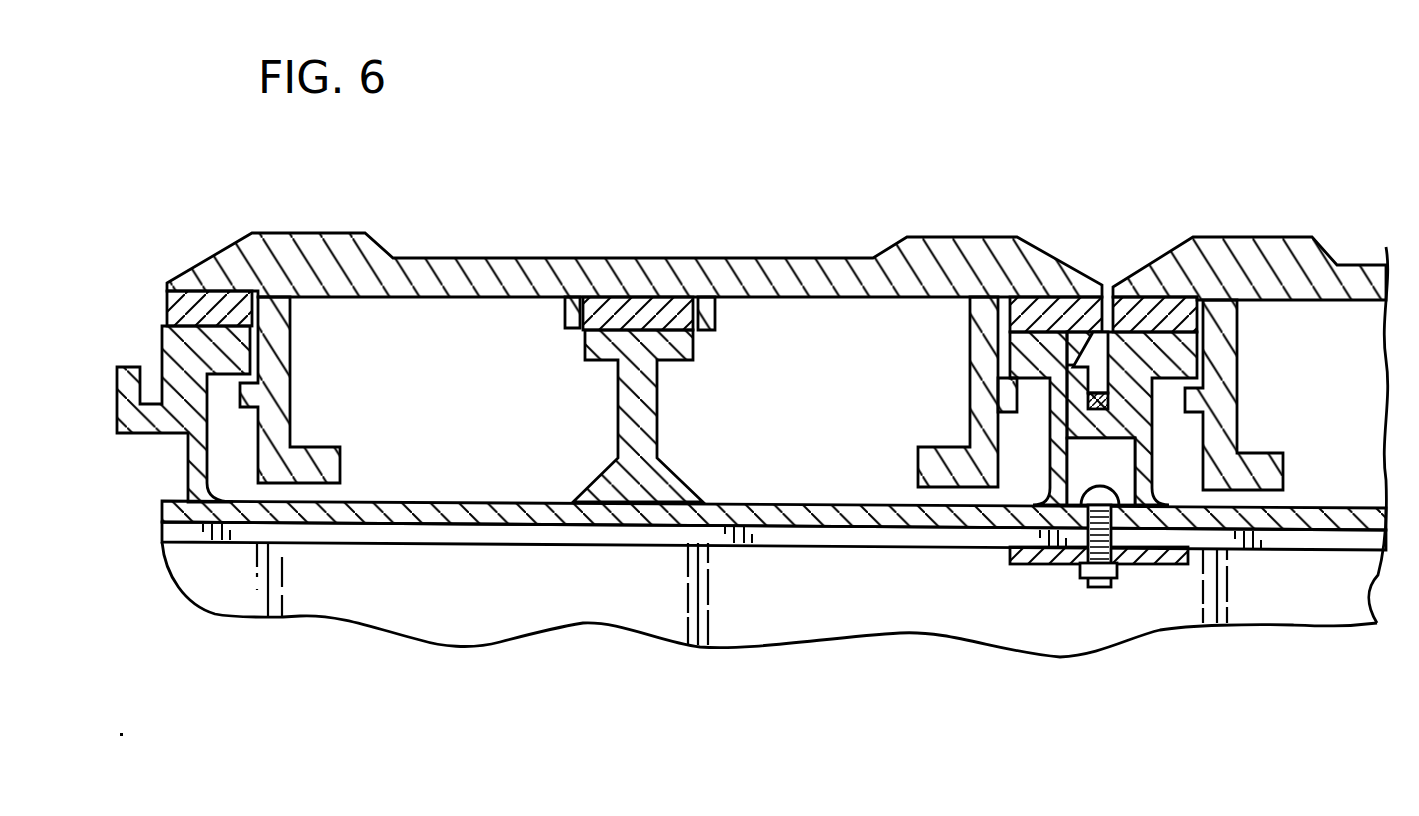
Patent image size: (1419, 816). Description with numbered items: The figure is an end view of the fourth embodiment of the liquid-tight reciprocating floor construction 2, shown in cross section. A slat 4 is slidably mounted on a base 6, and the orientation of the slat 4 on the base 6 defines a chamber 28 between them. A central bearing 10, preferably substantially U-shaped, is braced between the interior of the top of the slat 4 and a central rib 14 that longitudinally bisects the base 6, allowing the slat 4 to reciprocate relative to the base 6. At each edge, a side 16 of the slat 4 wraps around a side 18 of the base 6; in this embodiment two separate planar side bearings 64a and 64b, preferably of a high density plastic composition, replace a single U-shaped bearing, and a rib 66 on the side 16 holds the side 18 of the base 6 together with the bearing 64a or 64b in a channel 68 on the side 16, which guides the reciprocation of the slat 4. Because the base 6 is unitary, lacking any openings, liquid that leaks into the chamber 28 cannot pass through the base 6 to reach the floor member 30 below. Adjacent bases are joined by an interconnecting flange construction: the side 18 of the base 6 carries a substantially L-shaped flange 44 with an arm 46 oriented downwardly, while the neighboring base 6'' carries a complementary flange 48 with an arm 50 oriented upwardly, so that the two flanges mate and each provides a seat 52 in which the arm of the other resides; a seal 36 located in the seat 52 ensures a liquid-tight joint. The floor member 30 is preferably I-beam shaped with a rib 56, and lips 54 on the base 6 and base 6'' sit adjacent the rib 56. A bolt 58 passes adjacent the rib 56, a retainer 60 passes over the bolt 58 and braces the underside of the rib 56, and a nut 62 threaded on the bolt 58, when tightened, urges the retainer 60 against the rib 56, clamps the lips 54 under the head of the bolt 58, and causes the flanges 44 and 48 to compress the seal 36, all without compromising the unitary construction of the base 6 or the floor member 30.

The liquid-tight reciprocating floor construction 2 is at (775, 175).
The slat 4 is at (552, 258).
The base 6 is at (774, 544).
The base 6'' is at (1306, 572).
The central bearing 10 is at (617, 310).
The central rib 14 is at (627, 375).
The side of slat 16 is at (987, 420).
The side of base 18 is at (1055, 465).
The chamber 28 is at (430, 313).
The floor member 30 is at (647, 622).
The seal 36 is at (1153, 400).
The flange 44 is at (1017, 347).
The arm 46 is at (1145, 377).
The flange 48 is at (1097, 440).
The arm 50 is at (1052, 387).
The seat 52 is at (1075, 297).
The lips 54 is at (1140, 550).
The rib of floor member 56 is at (410, 535).
The bolt 58 is at (1100, 587).
The retainer 60 is at (1037, 540).
The nut 62 is at (1087, 572).
The side bearing 64a is at (210, 291).
The side bearing 64b is at (1157, 297).
The rib 66 is at (1012, 397).
The channel 68 is at (1008, 318).